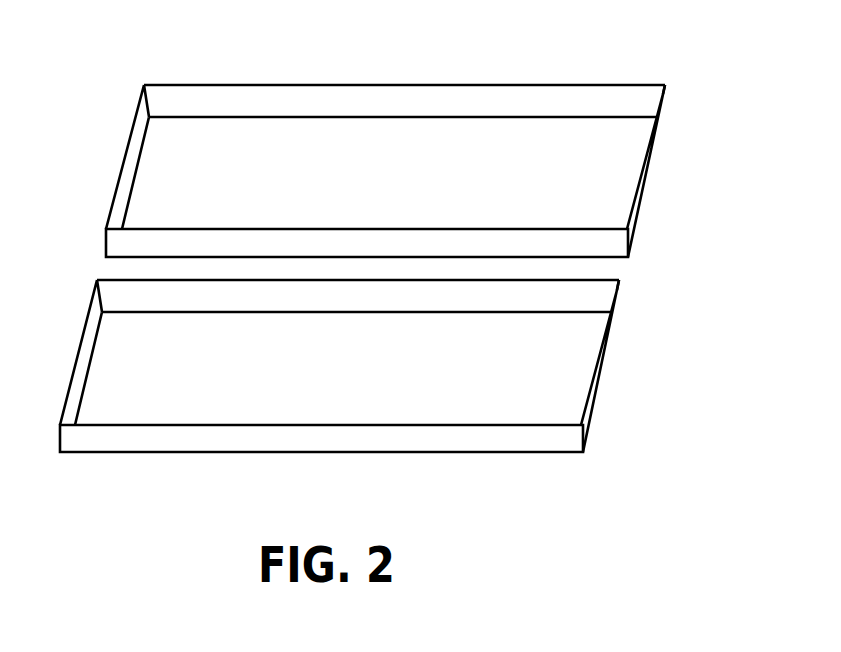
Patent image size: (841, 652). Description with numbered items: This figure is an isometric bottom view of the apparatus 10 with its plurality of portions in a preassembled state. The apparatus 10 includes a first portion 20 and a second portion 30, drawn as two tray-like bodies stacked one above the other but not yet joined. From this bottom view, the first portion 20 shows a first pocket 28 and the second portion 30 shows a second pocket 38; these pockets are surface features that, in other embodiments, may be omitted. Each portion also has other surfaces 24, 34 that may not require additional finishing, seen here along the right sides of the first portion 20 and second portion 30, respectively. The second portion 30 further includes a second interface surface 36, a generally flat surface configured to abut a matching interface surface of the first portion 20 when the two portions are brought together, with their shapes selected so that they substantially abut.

The apparatus 10 is at (86, 58).
The first portion 20 is at (584, 452).
The other surfaces 24 is at (600, 377).
The first pocket 28 is at (369, 380).
The second portion 30 is at (631, 253).
The other surfaces 34 is at (646, 182).
The second interface surface 36 is at (417, 256).
The second pocket 38 is at (417, 186).